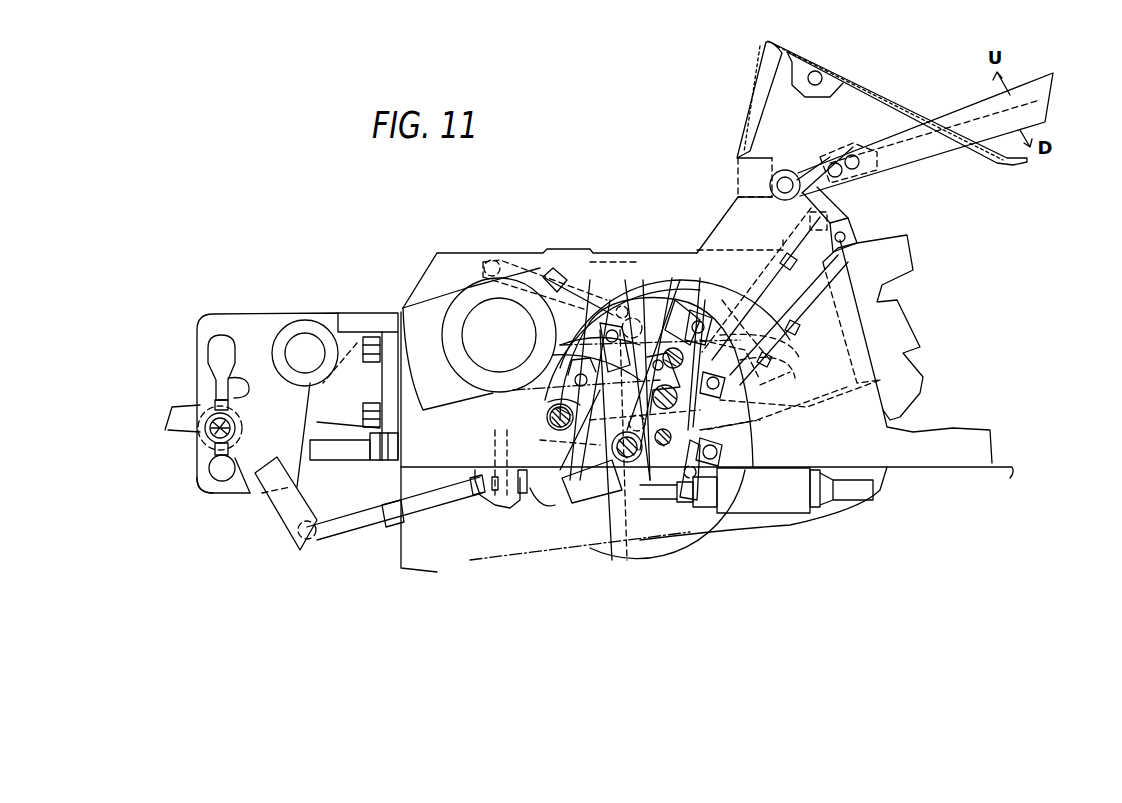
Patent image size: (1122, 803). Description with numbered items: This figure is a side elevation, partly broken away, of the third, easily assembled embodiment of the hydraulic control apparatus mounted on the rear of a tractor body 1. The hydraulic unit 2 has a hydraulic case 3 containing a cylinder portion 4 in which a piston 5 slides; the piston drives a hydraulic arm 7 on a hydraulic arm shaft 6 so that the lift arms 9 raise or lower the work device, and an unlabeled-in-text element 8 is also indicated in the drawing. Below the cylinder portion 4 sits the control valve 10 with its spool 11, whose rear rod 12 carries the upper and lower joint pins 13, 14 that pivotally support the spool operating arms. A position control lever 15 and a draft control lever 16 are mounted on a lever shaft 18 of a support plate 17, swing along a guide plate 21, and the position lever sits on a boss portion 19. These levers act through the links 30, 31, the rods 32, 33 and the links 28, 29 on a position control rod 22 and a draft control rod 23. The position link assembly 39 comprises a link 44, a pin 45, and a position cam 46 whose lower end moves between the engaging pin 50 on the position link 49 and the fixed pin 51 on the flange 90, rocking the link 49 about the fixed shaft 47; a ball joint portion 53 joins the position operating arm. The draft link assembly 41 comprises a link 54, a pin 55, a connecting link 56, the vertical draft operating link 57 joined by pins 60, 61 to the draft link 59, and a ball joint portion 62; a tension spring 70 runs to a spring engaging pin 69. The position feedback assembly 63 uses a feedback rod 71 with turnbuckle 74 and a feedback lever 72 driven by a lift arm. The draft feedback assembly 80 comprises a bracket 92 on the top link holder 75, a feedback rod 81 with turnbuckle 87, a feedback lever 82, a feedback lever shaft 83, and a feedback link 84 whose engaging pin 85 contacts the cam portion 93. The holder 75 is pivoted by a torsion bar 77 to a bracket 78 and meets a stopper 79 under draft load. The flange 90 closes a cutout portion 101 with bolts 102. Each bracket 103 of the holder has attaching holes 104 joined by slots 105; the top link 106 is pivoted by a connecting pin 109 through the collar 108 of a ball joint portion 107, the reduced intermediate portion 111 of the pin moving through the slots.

The tractor body 1 is at (405, 548).
The hydraulic unit 2 is at (621, 250).
The hydraulic case 3 is at (603, 262).
The cylinder portion 4 is at (790, 415).
The piston 5 is at (840, 343).
The hydraulic arm shaft 6 is at (480, 305).
The hydraulic arm 7 is at (567, 397).
The link 8 is at (760, 400).
The lift arms 9 is at (415, 325).
The control valve 10 is at (785, 513).
The spool 11 is at (708, 498).
The rod 12 is at (683, 482).
The joint pin 13 is at (595, 520).
The joint pin 14 is at (628, 450).
The position control lever 15 is at (960, 105).
The draft control lever 16 is at (950, 148).
The support plate 17 is at (722, 243).
The lever shaft 18 is at (785, 170).
The boss portion 19 is at (777, 200).
The guide plate 21 is at (893, 86).
The position control rod 22 is at (728, 400).
The draft control rod 23 is at (698, 320).
The link 28 is at (740, 430).
The link 29 is at (790, 352).
The link 30 is at (843, 233).
The link 31 is at (810, 225).
The rod 32 is at (782, 338).
The rod 33 is at (785, 272).
The position link assembly 39 is at (655, 468).
The draft link assembly 41 is at (605, 336).
The link 44 is at (790, 370).
The pin 45 is at (655, 320).
The position cam 46 is at (650, 388).
The fixed shaft 47 is at (597, 490).
The position link 49 is at (666, 480).
The engaging pin 50 is at (565, 358).
The fixed pin 51 is at (720, 452).
The ball joint portion 53 is at (600, 500).
The link 54 is at (775, 330).
The pin 55 is at (712, 330).
The connecting link 56 is at (657, 300).
The draft operating link 57 is at (562, 340).
The draft link 59 is at (600, 473).
The pin 60 is at (614, 328).
The pin 61 is at (548, 505).
The ball joint portion 62 is at (640, 500).
The position feedback assembly 63 is at (565, 275).
The spring engaging pin 69 is at (480, 470).
The tension spring 70 is at (520, 495).
The feedback rod 71 is at (538, 270).
The feedback lever 72 is at (636, 316).
The turnbuckle 74 is at (597, 300).
The top link holder 75 is at (258, 308).
The torsion bar 77 is at (305, 345).
The bracket 78 is at (355, 340).
The stopper 79 is at (352, 460).
The draft feedback assembly 80 is at (476, 500).
The feedback rod 81 is at (360, 528).
The feedback lever 82 is at (578, 448).
The feedback lever shaft 83 is at (570, 377).
The feedback link 84 is at (552, 425).
The engaging pin 85 is at (515, 425).
The turnbuckle 87 is at (428, 515).
The flange 90 is at (735, 320).
The bracket 92 is at (290, 520).
The cam portion 93 is at (548, 402).
The cutout portion 101 is at (792, 490).
The bolts 102 is at (575, 384).
The brackets 103 is at (215, 488).
The attaching holes 104 is at (222, 360).
The slots 105 is at (238, 388).
The top link 106 is at (172, 405).
The ball joint portion 107 is at (248, 480).
The collar 108 is at (236, 437).
The connecting pin 109 is at (232, 420).
The intermediate portion of reduced diameter 111 is at (235, 426).